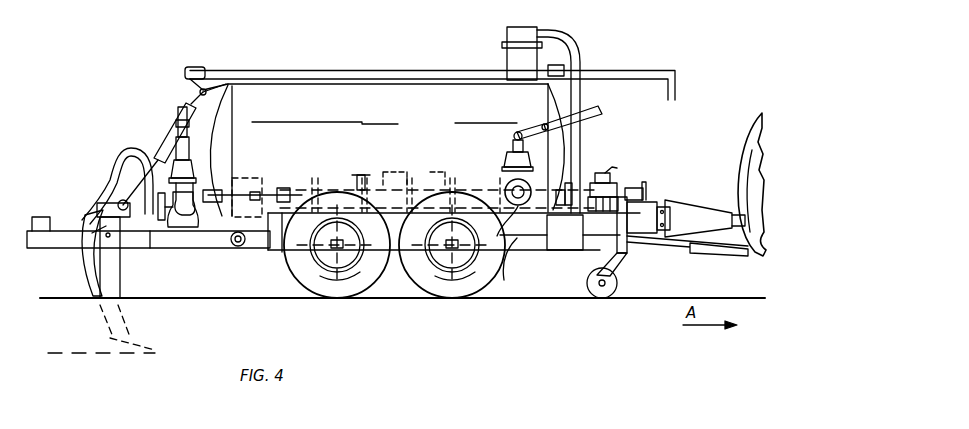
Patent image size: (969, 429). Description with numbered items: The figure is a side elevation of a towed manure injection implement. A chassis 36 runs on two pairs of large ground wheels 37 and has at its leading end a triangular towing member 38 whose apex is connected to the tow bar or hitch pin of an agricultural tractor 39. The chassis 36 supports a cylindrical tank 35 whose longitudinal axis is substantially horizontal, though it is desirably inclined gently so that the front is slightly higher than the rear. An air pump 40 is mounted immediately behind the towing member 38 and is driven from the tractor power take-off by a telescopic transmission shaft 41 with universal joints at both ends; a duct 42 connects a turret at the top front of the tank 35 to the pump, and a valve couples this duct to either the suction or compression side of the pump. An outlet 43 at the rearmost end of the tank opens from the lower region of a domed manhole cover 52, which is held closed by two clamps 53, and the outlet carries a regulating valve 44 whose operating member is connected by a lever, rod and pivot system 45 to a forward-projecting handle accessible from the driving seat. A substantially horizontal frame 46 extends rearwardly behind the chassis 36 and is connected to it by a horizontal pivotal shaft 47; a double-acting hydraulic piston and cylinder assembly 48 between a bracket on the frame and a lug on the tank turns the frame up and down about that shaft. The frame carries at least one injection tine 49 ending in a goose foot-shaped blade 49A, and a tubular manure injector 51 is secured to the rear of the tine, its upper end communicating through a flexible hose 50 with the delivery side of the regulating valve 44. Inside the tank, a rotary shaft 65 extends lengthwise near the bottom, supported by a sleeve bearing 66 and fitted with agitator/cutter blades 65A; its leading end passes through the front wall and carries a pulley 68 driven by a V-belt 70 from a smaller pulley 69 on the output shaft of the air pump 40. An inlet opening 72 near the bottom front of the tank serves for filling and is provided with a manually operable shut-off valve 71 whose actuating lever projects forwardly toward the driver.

The cylindrical tank 35 is at (375, 95).
The chassis 36 is at (513, 264).
The ground wheels 37 is at (300, 282).
The triangular towing member 38 is at (692, 205).
The agricultural tractor 39 is at (741, 151).
The air pump 40 is at (610, 187).
The telescopic transmission shaft 41 is at (742, 256).
The duct 42 is at (583, 60).
The outlet 43 is at (193, 248).
The regulating valve 44 is at (167, 248).
The lever, rod and pivot system 45 is at (316, 58).
The frame 46 is at (55, 238).
The pivotal shaft 47 is at (238, 247).
The hydraulic piston and cylinder assembly 48 is at (176, 124).
The injection tine 49 is at (114, 292).
The goose foot-shaped blade 49A is at (147, 348).
The flexible hose 50 is at (120, 157).
The tubular manure injector 51 is at (92, 291).
The domed manhole cover 52 is at (200, 163).
The clamps 53 is at (217, 188).
The rotary shaft 65 is at (393, 160).
The agitator/cutter blades 65A is at (438, 172).
The sleeve bearing 66 is at (310, 182).
The pulley 68 is at (567, 182).
The smaller pulley 69 is at (568, 246).
The V-belt 70 is at (553, 240).
The shut-off valve 71 is at (488, 163).
The inlet opening 72 is at (498, 221).